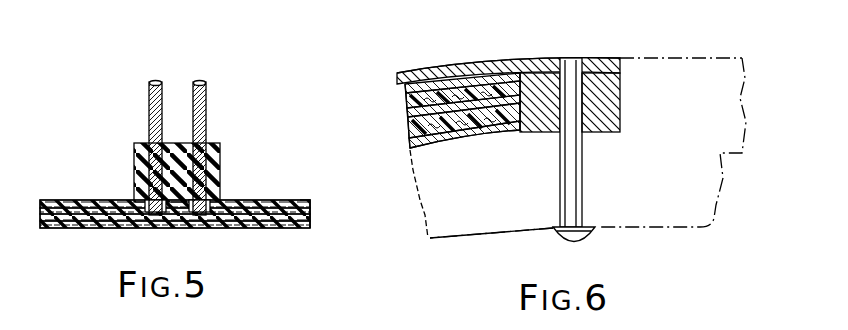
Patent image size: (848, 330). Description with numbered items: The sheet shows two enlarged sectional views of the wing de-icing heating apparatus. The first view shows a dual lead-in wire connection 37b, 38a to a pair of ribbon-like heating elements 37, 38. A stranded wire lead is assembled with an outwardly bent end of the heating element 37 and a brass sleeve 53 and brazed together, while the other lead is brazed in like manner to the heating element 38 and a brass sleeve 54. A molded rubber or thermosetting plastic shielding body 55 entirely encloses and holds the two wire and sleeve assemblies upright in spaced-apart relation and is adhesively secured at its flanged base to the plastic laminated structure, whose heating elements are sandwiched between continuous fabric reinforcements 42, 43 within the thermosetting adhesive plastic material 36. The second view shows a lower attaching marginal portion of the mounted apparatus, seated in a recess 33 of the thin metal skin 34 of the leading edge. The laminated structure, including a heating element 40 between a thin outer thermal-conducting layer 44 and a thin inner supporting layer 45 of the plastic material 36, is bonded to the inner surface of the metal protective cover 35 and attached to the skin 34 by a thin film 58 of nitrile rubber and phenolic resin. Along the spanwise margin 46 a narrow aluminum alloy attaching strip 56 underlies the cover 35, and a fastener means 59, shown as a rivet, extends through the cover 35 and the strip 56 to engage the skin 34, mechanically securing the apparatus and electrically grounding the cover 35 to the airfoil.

In FIG. 6, the recess 33 is at (540, 128).
In FIG. 6, the metal skin 34 is at (530, 210).
In FIG. 5, the protective cover 35 is at (184, 218).
In FIG. 6, the protective cover 35 is at (505, 62).
In FIG. 5, the thermosetting adhesive plastic material 36 is at (172, 222).
In FIG. 6, the thermosetting adhesive plastic material 36 is at (400, 110).
In FIG. 5, the heating element 37 is at (47, 216).
In FIG. 5, the lead-in connection terminal 37b is at (149, 100).
In FIG. 5, the heating element 38 is at (290, 207).
In FIG. 5, the lead-in connection terminal 38a is at (206, 100).
In FIG. 6, the heating element 40 is at (410, 117).
In FIG. 5, the reinforcement 42 is at (62, 204).
In FIG. 6, the reinforcement 42 is at (458, 137).
In FIG. 5, the reinforcement 43 is at (262, 223).
In FIG. 6, the reinforcement 43 is at (400, 84).
In FIG. 6, the outer thermal-conducting layer 44 is at (420, 70).
In FIG. 6, the inner supporting layer 45 is at (410, 142).
In FIG. 6, the spanwise-extending margin 46 is at (620, 107).
In FIG. 5, the brass sleeve 53 is at (148, 205).
In FIG. 5, the brass sleeve 54 is at (218, 205).
In FIG. 5, the shielding body 55 is at (136, 151).
In FIG. 6, the attaching strip 56 is at (600, 90).
In FIG. 6, the thin film 58 is at (442, 140).
In FIG. 6, the fastener means 59 is at (580, 233).